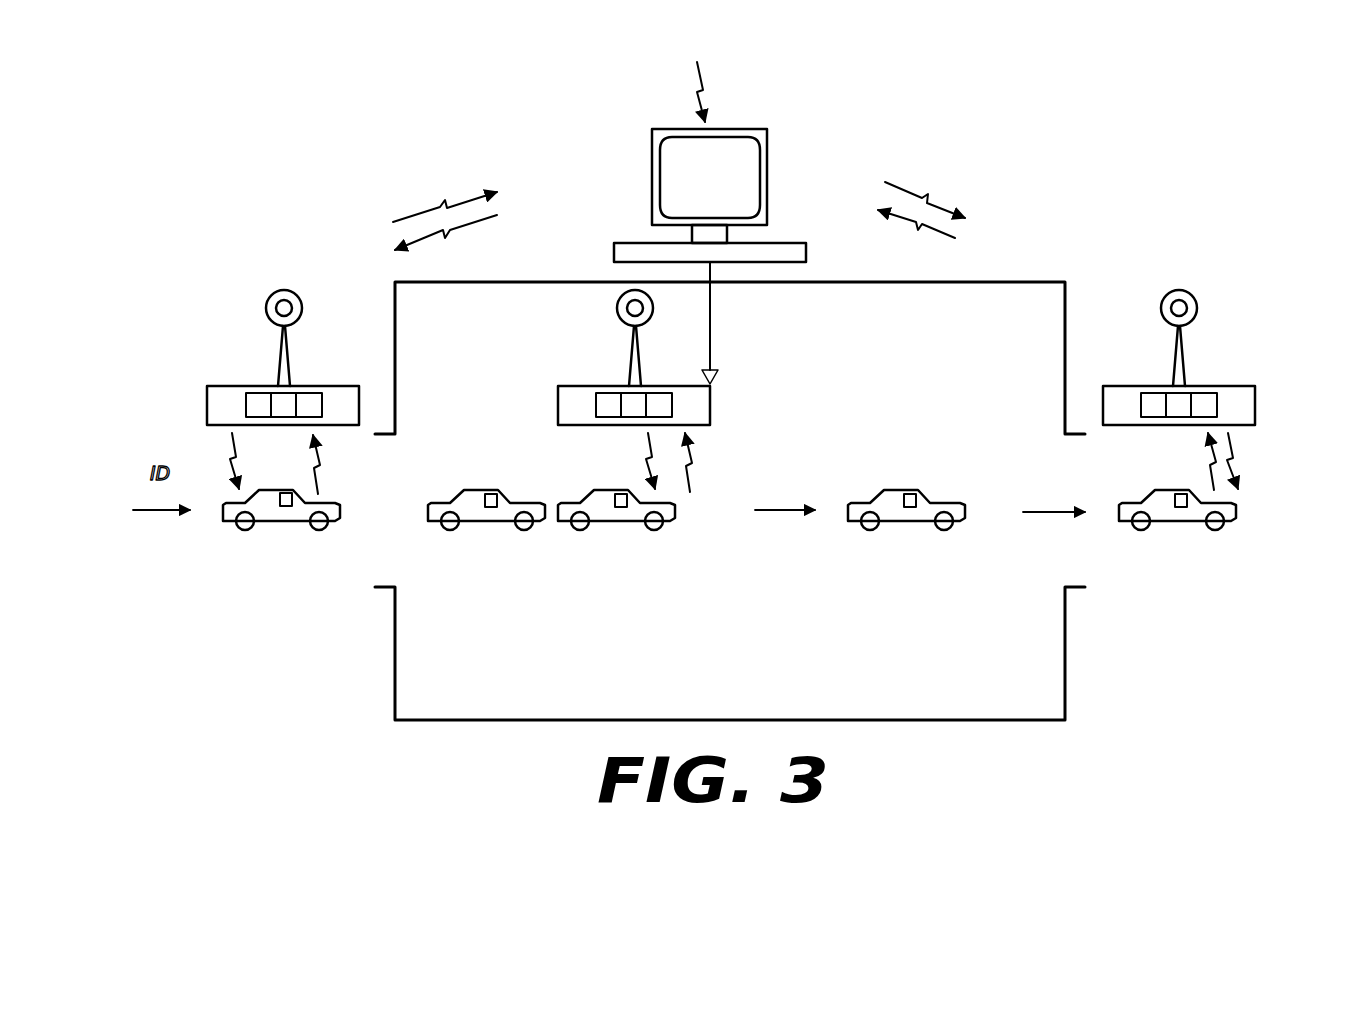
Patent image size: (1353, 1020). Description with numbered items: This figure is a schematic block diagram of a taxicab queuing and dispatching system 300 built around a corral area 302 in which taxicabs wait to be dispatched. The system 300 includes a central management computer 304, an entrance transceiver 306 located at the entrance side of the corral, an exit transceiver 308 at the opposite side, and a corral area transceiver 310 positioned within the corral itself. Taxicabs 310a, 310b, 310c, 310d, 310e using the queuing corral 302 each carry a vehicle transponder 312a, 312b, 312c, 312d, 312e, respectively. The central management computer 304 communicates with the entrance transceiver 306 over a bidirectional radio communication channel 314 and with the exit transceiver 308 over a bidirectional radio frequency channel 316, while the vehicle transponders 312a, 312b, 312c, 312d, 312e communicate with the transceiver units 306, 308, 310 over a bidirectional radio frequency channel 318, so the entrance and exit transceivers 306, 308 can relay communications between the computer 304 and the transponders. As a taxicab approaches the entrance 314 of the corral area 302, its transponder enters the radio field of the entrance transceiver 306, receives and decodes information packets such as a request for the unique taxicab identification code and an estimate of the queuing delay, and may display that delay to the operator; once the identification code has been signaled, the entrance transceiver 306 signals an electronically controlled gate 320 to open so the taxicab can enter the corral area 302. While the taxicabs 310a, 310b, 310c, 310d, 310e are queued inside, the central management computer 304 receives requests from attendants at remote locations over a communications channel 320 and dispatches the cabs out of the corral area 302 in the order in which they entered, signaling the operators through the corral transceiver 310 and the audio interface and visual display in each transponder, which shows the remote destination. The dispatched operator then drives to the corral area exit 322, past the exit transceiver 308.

The system 300 is at (1048, 144).
The corral area 302 is at (893, 282).
The central management computer 304 is at (748, 129).
The entrance transceiver 306 is at (266, 308).
The exit transceiver 308 is at (1197, 303).
The corral area transceiver 310 is at (617, 308).
The taxicab 310a is at (340, 507).
The taxicab 310b is at (466, 498).
The taxicab 310c is at (603, 525).
The taxicab 310d is at (870, 496).
The taxicab 310e is at (1120, 520).
The vehicle transponder 312a is at (287, 506).
The vehicle transponder 312b is at (491, 507).
The vehicle transponder 312c is at (621, 507).
The vehicle transponder 312d is at (911, 496).
The vehicle transponder 312e is at (1180, 494).
The bidirectional radio communication channel 314 is at (463, 238).
The bidirectional radio frequency channel 316 is at (940, 198).
The bidirectional radio frequency channel 318 is at (238, 457).
The electronically controlled gate 320 is at (698, 95).
The corral area exit 322 is at (1075, 478).